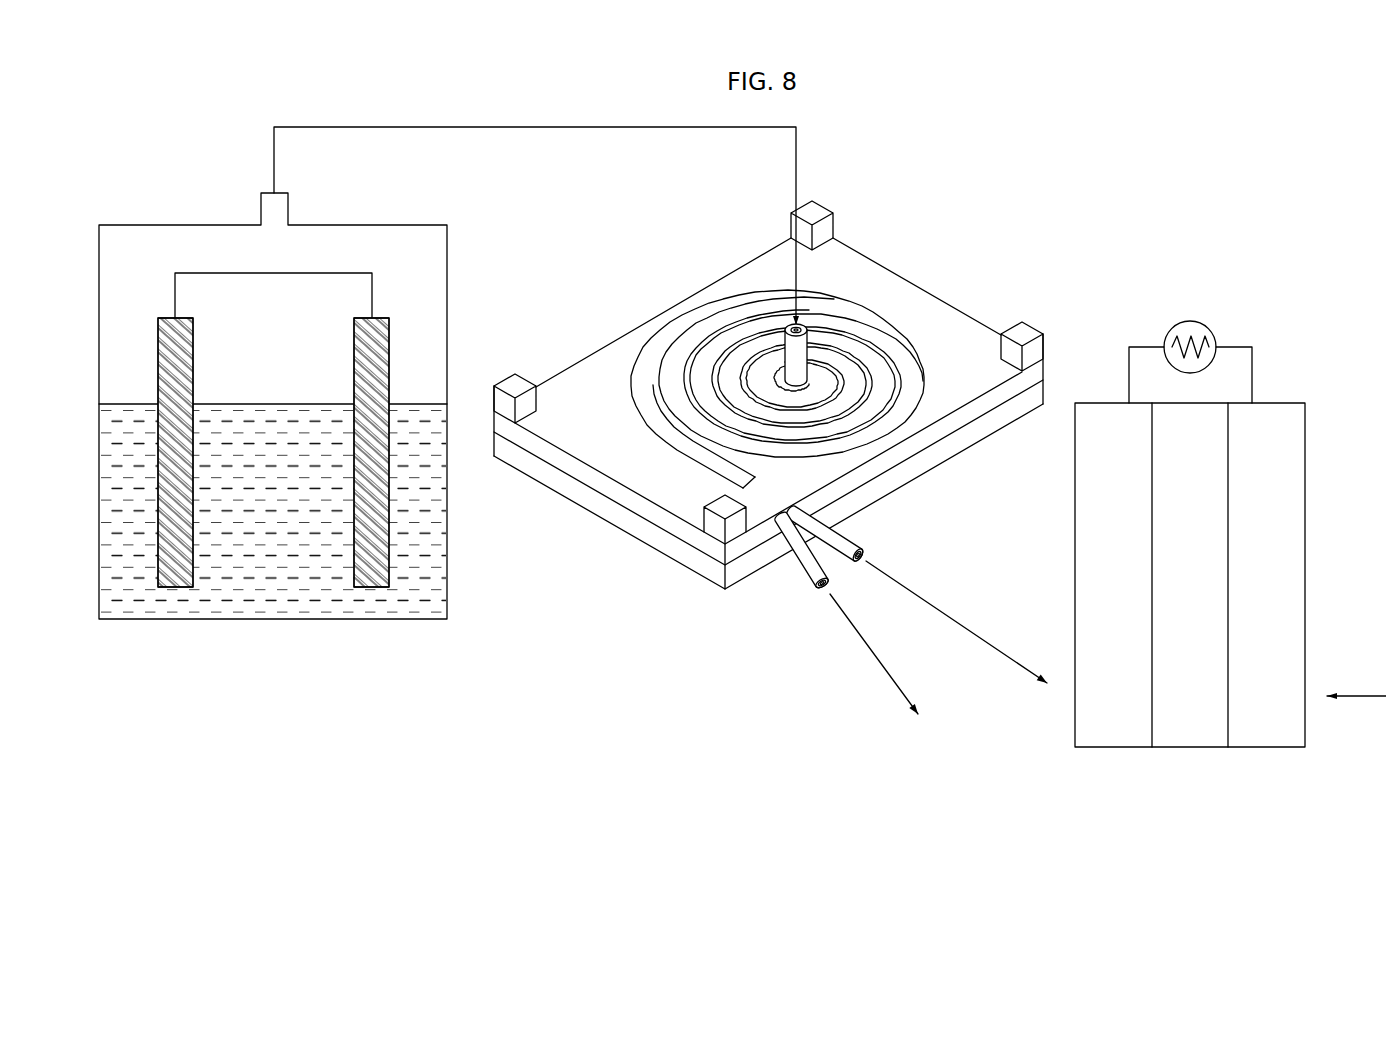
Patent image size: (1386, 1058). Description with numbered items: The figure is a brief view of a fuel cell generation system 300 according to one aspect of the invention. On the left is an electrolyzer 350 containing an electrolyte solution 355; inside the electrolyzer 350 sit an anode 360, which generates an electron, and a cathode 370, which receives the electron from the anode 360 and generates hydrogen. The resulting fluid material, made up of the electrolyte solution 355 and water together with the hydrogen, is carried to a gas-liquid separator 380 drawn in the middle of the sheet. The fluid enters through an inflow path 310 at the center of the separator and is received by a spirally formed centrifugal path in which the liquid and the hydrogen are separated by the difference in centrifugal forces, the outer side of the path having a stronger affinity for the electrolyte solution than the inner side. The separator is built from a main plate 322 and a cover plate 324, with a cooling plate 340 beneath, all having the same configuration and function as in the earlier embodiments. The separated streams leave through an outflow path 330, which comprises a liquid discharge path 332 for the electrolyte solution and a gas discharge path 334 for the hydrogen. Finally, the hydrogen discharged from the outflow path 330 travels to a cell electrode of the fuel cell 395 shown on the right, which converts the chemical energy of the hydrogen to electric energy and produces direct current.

The fuel cell generation system 300 is at (1248, 230).
The inflow path 310 is at (802, 343).
The main plate 322 is at (665, 523).
The cover plate 324 is at (910, 360).
The outflow path 330 is at (780, 730).
The liquid discharge path 332 is at (802, 558).
The gas discharge path 334 is at (835, 545).
The cooling plate 340 is at (680, 558).
The electrolyzer 350 is at (440, 275).
The electrolyte solution 355 is at (447, 588).
The anode 360 is at (176, 587).
The cathode 370 is at (372, 587).
The gas-liquid separator 380 is at (536, 687).
The fuel cell 395 is at (1279, 412).